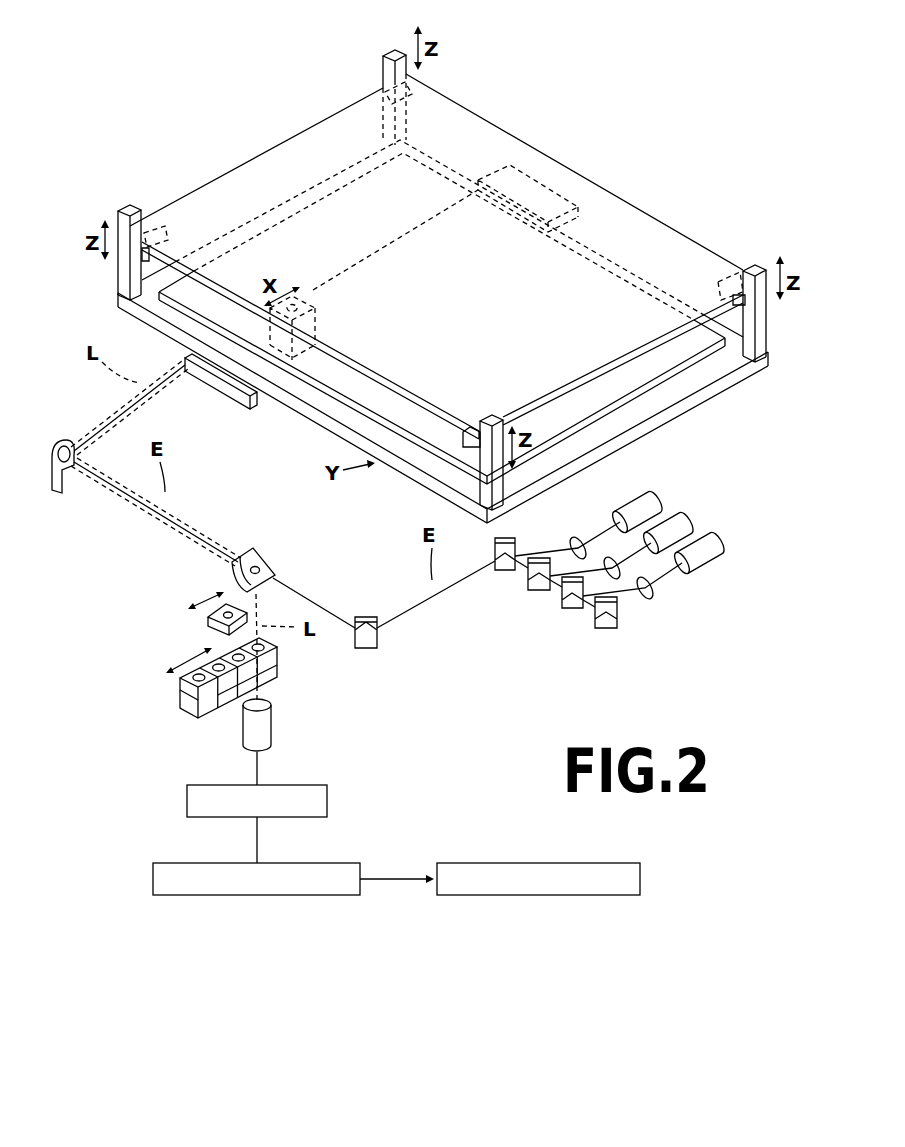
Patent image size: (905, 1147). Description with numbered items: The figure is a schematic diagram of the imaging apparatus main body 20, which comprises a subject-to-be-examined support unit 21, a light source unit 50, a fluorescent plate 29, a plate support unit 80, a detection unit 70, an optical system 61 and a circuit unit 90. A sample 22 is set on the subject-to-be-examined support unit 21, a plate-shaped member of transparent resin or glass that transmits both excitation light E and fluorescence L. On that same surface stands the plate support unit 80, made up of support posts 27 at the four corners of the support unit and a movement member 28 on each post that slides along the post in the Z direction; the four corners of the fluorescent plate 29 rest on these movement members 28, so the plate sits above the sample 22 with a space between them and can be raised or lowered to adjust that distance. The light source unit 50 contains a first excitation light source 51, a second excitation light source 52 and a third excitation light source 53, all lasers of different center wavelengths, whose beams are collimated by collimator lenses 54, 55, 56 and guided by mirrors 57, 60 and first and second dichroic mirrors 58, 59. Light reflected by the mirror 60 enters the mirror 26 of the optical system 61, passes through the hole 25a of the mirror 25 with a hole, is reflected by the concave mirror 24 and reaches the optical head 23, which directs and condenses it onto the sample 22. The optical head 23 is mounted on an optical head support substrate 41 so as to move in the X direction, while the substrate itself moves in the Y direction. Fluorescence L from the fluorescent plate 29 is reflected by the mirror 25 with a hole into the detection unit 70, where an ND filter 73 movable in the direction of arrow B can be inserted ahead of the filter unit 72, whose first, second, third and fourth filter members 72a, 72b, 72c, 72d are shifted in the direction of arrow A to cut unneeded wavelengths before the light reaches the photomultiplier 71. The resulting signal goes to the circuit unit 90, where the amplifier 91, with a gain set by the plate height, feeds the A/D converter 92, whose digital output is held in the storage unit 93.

The imaging apparatus main body 20 is at (116, 62).
The subject-to-be-examined support unit 21 is at (740, 360).
The sample 22 is at (690, 352).
The optical head 23 is at (327, 308).
The concave mirror 24 is at (62, 437).
The mirror with a hole 25 is at (281, 537).
The hole 25a is at (262, 566).
The mirror 26 is at (365, 615).
The support post 27 is at (395, 50).
The movement member 28 is at (383, 88).
The fluorescent plate 29 is at (283, 168).
The optical head support substrate 41 is at (247, 410).
The light source unit 50 is at (710, 462).
The first excitation light source 51 is at (650, 505).
The second excitation light source 52 is at (686, 522).
The third excitation light source 53 is at (722, 540).
The collimator lens 54 is at (578, 536).
The collimator lens 55 is at (617, 580).
The collimator lens 56 is at (655, 590).
The mirror 57 is at (606, 630).
The first dichroic mirror 58 is at (572, 610).
The second dichroic mirror 59 is at (538, 592).
The mirror 60 is at (505, 572).
The optical system 61 is at (176, 568).
The detection unit 70 is at (227, 679).
The photomultiplier 71 is at (275, 728).
The filter unit 72 is at (180, 695).
The first filter member 72a is at (182, 720).
The second filter member 72b is at (226, 705).
The third filter member 72c is at (247, 697).
The fourth filter member 72d is at (275, 665).
The ND filter 73 is at (210, 622).
The plate support unit 80 is at (91, 190).
The circuit unit 90 is at (432, 857).
The amplifier 91 is at (328, 801).
The A/D converter 92 is at (360, 866).
The storage unit 93 is at (640, 866).